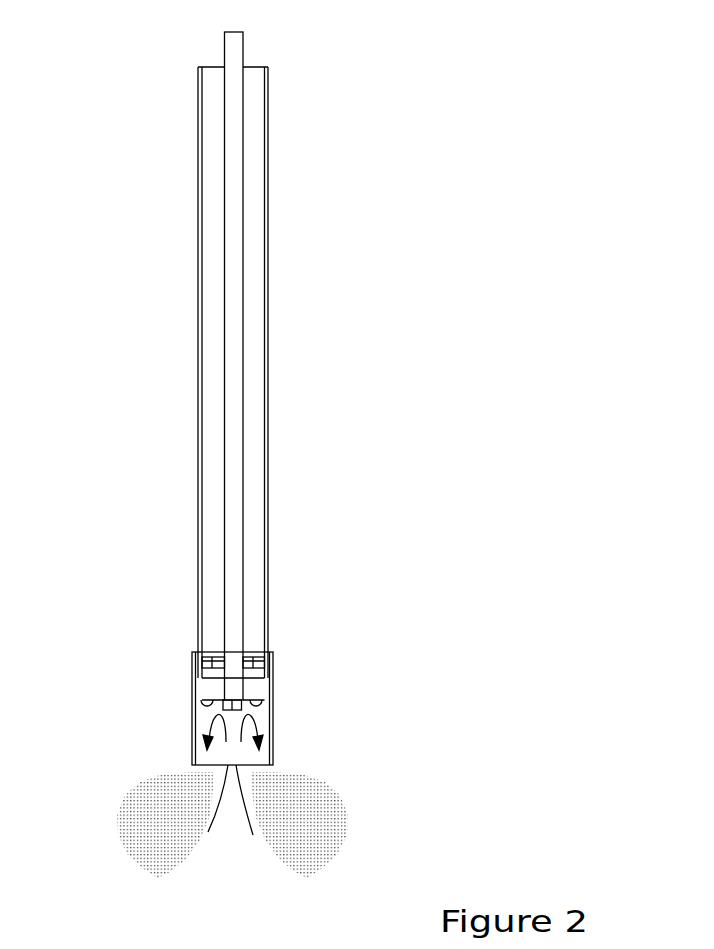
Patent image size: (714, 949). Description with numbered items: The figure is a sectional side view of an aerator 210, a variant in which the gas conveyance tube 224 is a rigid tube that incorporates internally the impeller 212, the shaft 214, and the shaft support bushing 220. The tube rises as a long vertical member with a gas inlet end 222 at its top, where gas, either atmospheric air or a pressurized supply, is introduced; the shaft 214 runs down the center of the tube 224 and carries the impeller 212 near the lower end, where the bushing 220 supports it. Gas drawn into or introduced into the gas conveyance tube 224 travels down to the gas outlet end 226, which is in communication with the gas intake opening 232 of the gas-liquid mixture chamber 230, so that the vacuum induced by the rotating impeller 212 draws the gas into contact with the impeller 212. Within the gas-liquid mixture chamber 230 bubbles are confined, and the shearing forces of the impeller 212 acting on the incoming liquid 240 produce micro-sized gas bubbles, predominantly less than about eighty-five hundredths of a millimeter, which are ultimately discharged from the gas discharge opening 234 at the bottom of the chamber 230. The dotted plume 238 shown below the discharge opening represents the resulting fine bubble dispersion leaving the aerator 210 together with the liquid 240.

The aerator 210 is at (442, 330).
The impeller 212 is at (205, 702).
The shaft 214 is at (225, 132).
The shaft support bushing 220 is at (220, 660).
The gas inlet end 222 is at (251, 80).
The gas conveyance tube 224 is at (268, 280).
The gas outlet end 226 is at (250, 673).
The gas-liquid mixture chamber 230 is at (273, 737).
The gas intake opening 232 is at (253, 687).
The gas discharge opening 234 is at (210, 767).
The spray cloud 238 is at (318, 807).
The incoming liquid 240 is at (232, 800).